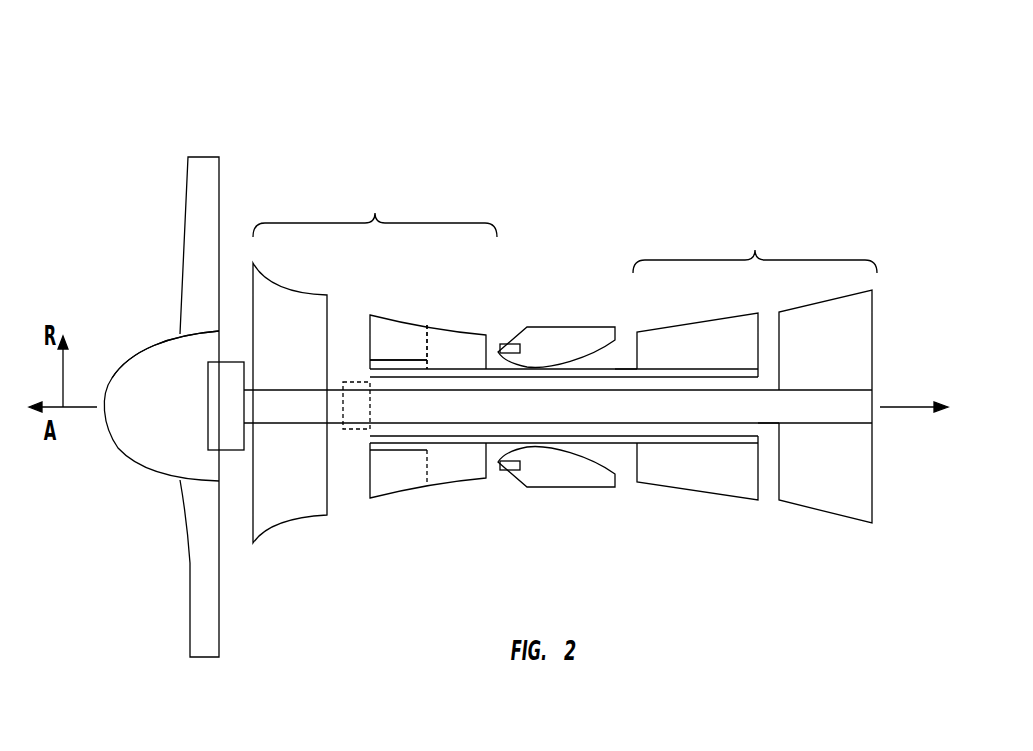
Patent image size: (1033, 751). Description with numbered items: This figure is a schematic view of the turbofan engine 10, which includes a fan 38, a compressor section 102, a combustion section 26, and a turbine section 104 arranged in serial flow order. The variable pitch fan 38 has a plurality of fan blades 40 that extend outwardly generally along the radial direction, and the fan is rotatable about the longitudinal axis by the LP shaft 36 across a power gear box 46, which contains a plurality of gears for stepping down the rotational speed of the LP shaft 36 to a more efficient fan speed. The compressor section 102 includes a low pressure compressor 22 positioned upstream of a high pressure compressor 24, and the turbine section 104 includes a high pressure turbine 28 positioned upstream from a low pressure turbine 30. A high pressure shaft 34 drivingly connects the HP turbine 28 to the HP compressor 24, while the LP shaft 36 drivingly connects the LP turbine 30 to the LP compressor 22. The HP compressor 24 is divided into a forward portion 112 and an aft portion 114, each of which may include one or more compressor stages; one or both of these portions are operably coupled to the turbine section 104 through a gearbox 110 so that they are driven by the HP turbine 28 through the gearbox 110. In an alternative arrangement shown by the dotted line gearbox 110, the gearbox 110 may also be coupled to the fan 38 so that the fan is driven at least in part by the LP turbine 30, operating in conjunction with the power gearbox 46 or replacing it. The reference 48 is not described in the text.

The turbofan engine 10 is at (276, 72).
The low pressure compressor 22 is at (275, 357).
The high pressure compressor 24 is at (441, 318).
The combustion section 26 is at (536, 357).
The high pressure turbine 28 is at (683, 357).
The low pressure turbine 30 is at (803, 357).
The high pressure shaft 34 is at (626, 370).
The low pressure shaft 36 is at (768, 423).
The variable pitch fan 38 is at (135, 478).
The fan blades 40 is at (190, 563).
The power gear box 46 is at (207, 391).
The nacelle / hub surface 48 is at (124, 360).
The compressor section 102 is at (375, 209).
The turbine section 104 is at (755, 245).
The gearbox 110 is at (355, 429).
The forward portion 112 is at (405, 338).
The aft portion 114 is at (468, 343).